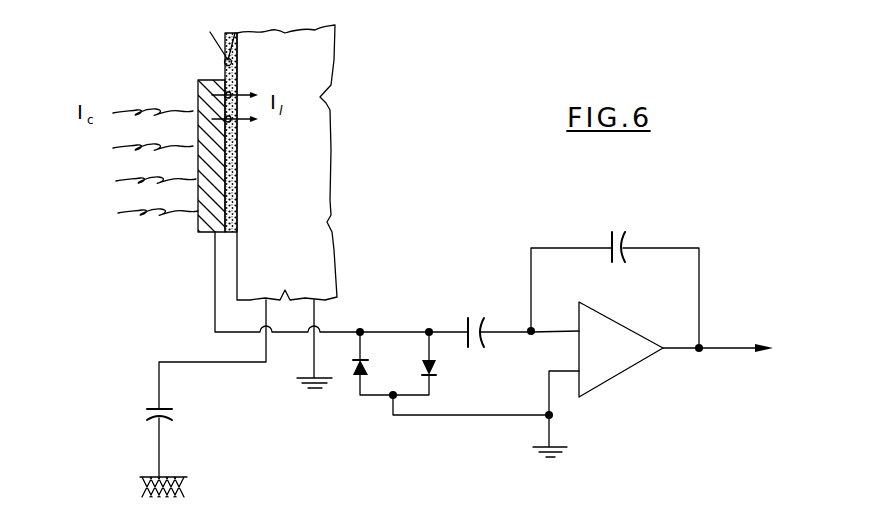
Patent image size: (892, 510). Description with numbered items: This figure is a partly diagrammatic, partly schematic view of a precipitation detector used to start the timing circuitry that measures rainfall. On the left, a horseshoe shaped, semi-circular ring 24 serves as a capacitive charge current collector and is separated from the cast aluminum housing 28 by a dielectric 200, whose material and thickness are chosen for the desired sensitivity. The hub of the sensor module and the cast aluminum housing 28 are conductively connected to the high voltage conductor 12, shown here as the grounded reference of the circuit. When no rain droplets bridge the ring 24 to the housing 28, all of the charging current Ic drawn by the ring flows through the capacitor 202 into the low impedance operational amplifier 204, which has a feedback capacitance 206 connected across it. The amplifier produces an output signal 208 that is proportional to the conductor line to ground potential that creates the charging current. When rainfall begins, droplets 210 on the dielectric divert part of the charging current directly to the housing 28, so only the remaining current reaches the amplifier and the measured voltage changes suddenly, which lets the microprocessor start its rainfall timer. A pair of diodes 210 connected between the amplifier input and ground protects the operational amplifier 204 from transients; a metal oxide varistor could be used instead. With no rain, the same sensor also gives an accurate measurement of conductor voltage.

The high voltage conductor 12 is at (302, 384).
The semi-circular ring 24 is at (203, 233).
The cast aluminum housing 28 is at (320, 200).
The dielectric 200 is at (237, 157).
The capacitor 202 is at (483, 295).
The operational amplifier 204 is at (612, 325).
The feedback capacitance 206 is at (618, 232).
The output signal 208 is at (728, 345).
The droplets / diodes 210 is at (212, 33).